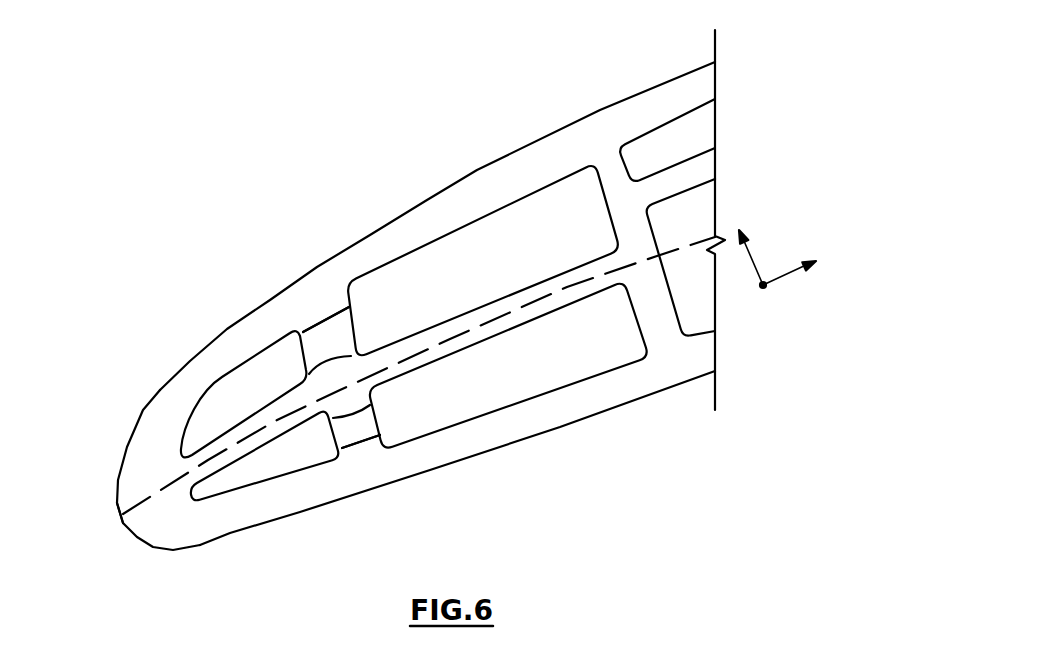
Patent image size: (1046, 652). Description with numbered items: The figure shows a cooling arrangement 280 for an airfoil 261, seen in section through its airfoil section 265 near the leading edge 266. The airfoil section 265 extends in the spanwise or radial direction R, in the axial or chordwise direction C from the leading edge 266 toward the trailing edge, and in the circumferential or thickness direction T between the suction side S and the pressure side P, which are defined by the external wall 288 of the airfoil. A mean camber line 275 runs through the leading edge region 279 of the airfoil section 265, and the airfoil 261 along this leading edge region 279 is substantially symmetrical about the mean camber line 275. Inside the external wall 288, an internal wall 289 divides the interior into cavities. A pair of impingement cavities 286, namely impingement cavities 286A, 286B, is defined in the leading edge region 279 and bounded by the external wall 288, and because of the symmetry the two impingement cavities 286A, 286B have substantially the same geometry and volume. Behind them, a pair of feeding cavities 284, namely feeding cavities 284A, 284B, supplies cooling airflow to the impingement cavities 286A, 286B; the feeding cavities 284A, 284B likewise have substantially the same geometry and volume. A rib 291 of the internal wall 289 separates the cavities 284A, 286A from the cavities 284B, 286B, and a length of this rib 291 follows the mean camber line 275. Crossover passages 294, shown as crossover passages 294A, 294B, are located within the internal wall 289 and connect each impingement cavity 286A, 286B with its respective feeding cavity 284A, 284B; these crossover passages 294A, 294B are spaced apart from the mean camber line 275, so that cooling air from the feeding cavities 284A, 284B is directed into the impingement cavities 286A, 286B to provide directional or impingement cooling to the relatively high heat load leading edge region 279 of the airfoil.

The airfoil 261 is at (118, 252).
The airfoil section 265 is at (658, 76).
The leading edge 266 is at (125, 514).
The mean camber line 275 is at (681, 247).
The leading edge region 279 is at (213, 556).
The cooling arrangement 280 is at (294, 222).
The feeding cavities 284 is at (459, 256).
The feeding cavity 284A is at (420, 249).
The feeding cavity 284B is at (469, 417).
The impingement cavities 286 is at (200, 373).
The impingement cavity 286A is at (246, 368).
The impingement cavity 286B is at (267, 482).
The external wall 288 is at (188, 385).
The internal wall 289 is at (516, 325).
The rib 291 is at (386, 380).
The crossover passages 294 is at (267, 281).
The crossover passage 294A is at (330, 319).
The crossover passage 294B is at (355, 443).
The suction side S is at (481, 170).
The pressure side P is at (576, 420).
The thickness direction T is at (753, 252).
The chordwise direction C is at (798, 267).
The radial direction R is at (763, 285).